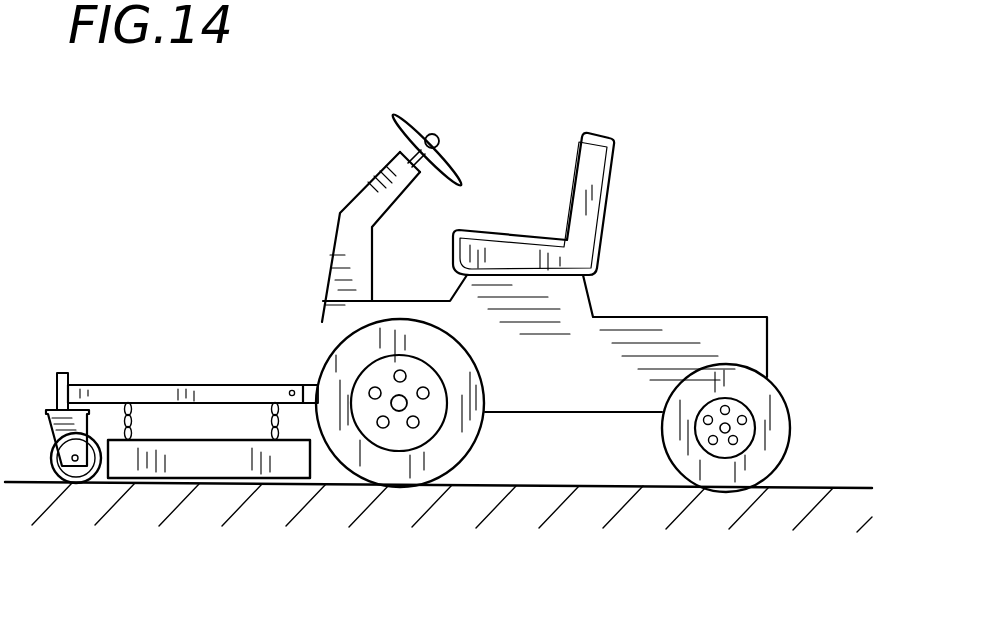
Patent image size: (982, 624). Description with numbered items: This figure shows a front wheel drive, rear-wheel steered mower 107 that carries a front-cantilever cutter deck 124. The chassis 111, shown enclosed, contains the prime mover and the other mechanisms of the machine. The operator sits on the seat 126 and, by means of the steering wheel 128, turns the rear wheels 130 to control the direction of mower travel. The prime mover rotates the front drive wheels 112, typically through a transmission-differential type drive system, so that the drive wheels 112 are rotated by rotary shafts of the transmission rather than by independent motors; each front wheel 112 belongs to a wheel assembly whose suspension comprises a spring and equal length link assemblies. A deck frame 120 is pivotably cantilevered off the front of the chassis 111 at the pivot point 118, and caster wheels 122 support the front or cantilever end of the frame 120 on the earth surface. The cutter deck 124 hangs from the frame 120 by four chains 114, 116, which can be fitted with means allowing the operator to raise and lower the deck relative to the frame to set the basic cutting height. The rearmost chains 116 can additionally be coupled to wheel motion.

The mower 107 is at (608, 468).
The chassis 111 is at (660, 307).
The front drive wheels 112 is at (473, 443).
The chains 114 is at (140, 408).
The rearmost chains 116 is at (266, 416).
The pivot point 118 is at (292, 388).
The deck frame 120 is at (102, 388).
The caster wheels 122 is at (53, 482).
The cutter deck 124 is at (213, 463).
The seat 126 is at (603, 137).
The steering wheel 128 is at (413, 124).
The rear wheels 130 is at (787, 400).